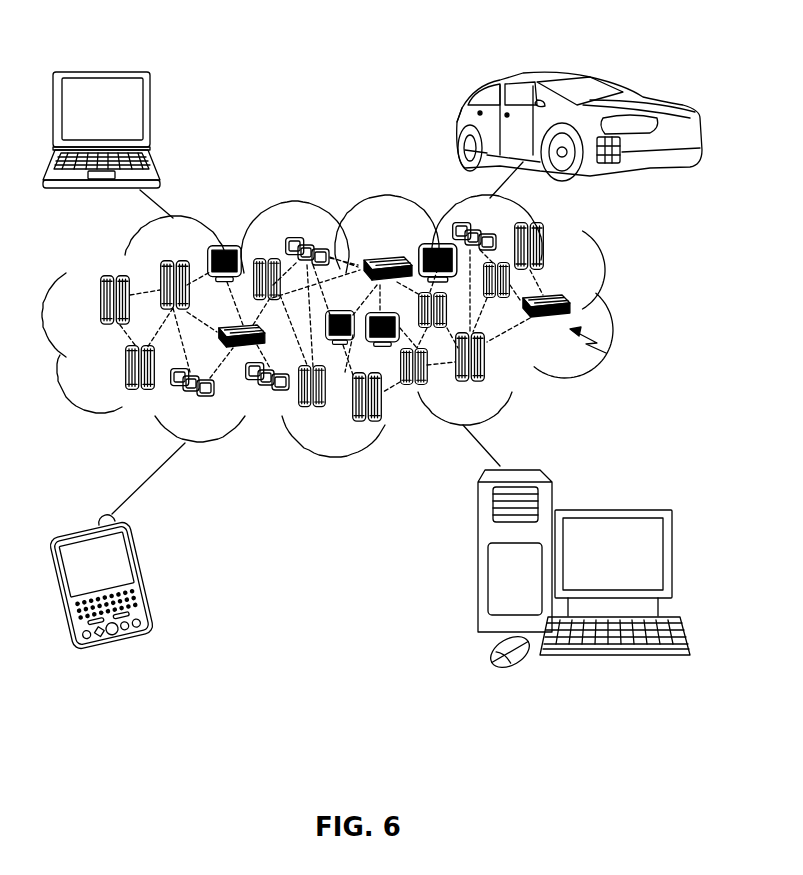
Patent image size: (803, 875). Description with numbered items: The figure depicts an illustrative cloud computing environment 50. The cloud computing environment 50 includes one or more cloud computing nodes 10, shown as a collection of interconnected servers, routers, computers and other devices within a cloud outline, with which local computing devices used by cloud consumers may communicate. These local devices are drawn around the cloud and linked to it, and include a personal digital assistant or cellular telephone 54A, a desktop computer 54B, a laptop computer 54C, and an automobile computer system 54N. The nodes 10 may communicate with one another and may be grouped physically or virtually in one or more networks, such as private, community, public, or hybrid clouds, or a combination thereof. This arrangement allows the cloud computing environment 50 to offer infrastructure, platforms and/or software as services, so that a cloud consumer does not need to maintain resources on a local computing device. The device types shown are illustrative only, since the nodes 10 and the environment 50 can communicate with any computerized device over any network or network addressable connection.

The cloud computing nodes 10 is at (608, 350).
The cloud computing environment 50 is at (612, 305).
The personal digital assistant or cellular telephone 54A is at (143, 578).
The desktop computer 54B is at (620, 498).
The laptop computer 54C is at (153, 113).
The automobile computer system 54N is at (458, 126).